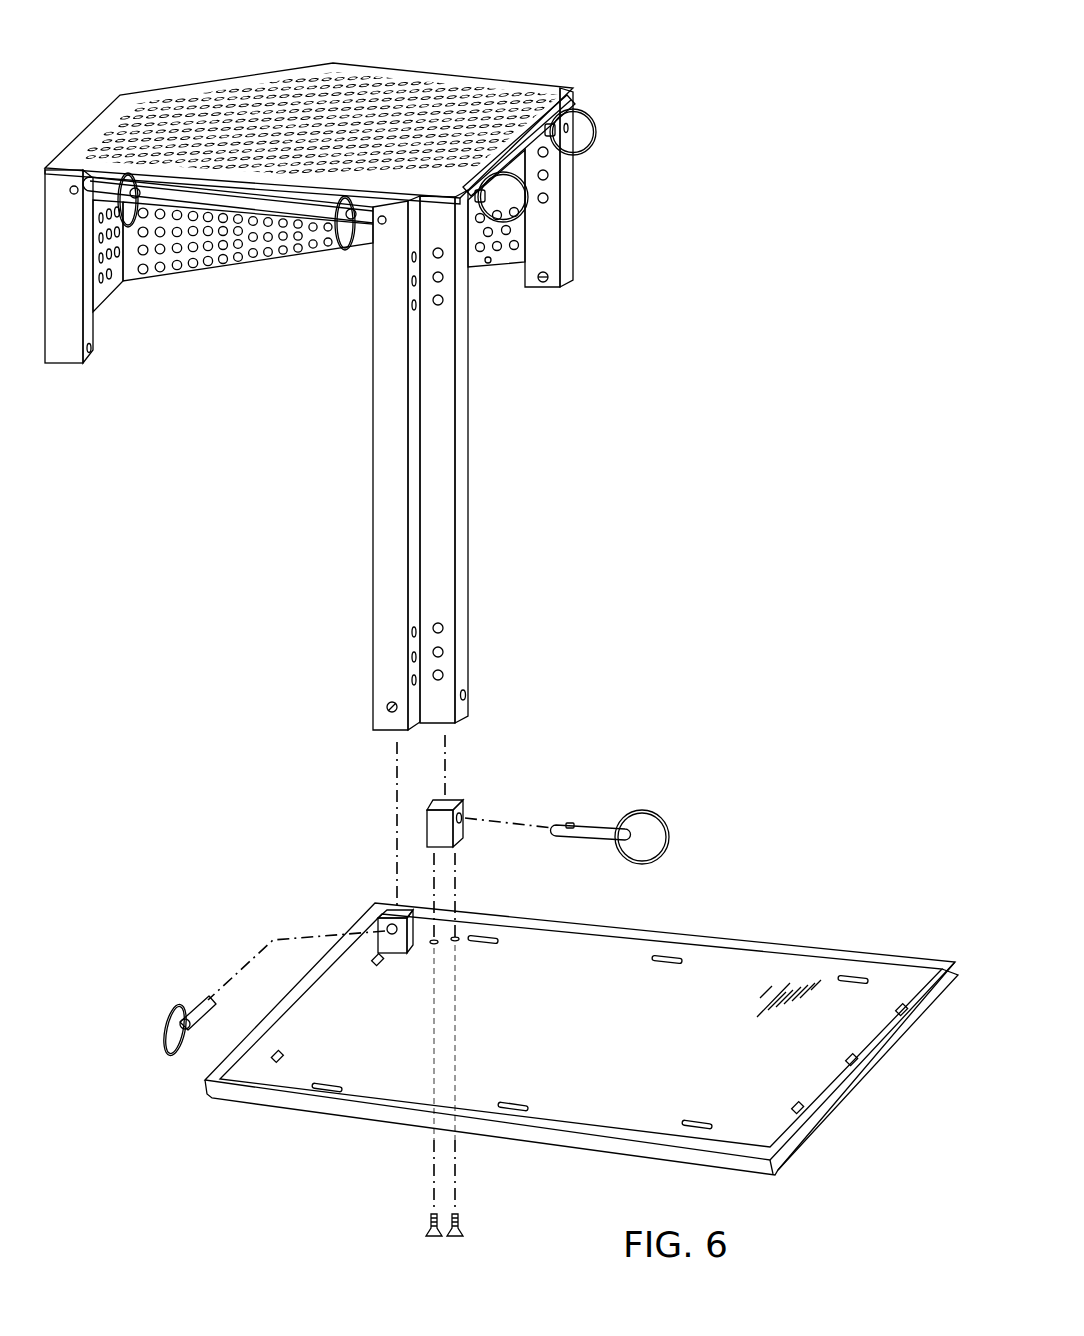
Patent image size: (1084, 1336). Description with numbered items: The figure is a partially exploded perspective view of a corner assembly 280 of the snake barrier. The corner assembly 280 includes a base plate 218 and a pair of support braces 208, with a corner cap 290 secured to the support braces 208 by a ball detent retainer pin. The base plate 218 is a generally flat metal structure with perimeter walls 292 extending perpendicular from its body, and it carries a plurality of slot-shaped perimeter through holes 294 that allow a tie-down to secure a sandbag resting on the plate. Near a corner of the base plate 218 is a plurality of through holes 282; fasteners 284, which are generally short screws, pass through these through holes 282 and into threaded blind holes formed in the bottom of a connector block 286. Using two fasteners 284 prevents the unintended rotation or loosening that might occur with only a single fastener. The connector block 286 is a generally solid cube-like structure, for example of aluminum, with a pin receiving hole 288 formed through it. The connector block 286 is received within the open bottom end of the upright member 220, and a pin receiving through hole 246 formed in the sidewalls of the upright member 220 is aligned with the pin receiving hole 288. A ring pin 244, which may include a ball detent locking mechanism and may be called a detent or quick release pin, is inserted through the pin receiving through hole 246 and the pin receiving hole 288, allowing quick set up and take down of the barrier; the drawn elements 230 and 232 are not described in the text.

The support brace 208 is at (420, 460).
The base plate 218 is at (581, 960).
The upright member 220 is at (383, 402).
The locking rods with ring pins 230 is at (535, 100).
The mounting brackets 232 is at (567, 262).
The ring pin 244 is at (592, 825).
The pin receiving through hole 246 is at (388, 710).
The corner assembly 280 is at (364, 184).
The through holes 282 is at (457, 937).
The fasteners 284 is at (430, 1226).
The connector block 286 is at (441, 881).
The pin receiving hole 288 is at (463, 822).
The corner cap 290 is at (238, 72).
The perimeter walls 292 is at (905, 960).
The perimeter through holes 294 is at (665, 967).